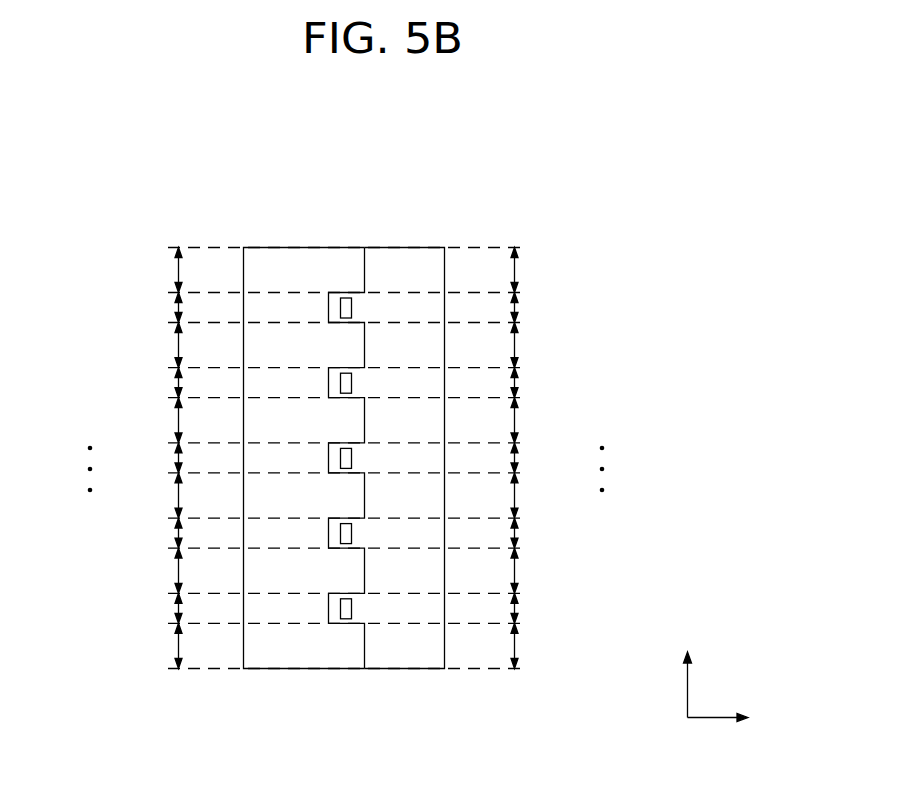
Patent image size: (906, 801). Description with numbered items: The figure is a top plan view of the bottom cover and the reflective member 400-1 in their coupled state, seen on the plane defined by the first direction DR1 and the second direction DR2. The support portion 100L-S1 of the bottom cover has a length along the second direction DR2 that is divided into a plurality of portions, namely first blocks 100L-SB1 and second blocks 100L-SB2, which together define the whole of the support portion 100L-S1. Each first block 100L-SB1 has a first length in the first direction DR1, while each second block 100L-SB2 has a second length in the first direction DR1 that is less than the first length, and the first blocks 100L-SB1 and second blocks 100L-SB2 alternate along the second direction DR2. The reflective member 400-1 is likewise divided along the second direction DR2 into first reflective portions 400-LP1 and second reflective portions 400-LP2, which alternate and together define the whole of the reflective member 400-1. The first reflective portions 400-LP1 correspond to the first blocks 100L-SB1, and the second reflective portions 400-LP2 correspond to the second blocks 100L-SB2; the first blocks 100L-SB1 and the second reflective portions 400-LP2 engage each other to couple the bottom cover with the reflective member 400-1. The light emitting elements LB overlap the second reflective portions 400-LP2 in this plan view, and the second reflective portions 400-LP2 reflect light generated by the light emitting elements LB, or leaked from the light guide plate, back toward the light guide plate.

The support portion 100L-S1 is at (290, 231).
The reflective member 400-1 is at (406, 231).
The light emitting element LB is at (344, 297).
The first block 100L-SB1 is at (178, 271).
The second block 100L-SB2 is at (178, 308).
The first reflective portion 400-LP1 is at (515, 271).
The second reflective portion 400-LP2 is at (515, 308).
The first directional axis DR1 is at (739, 717).
The second directional axis DR2 is at (689, 673).